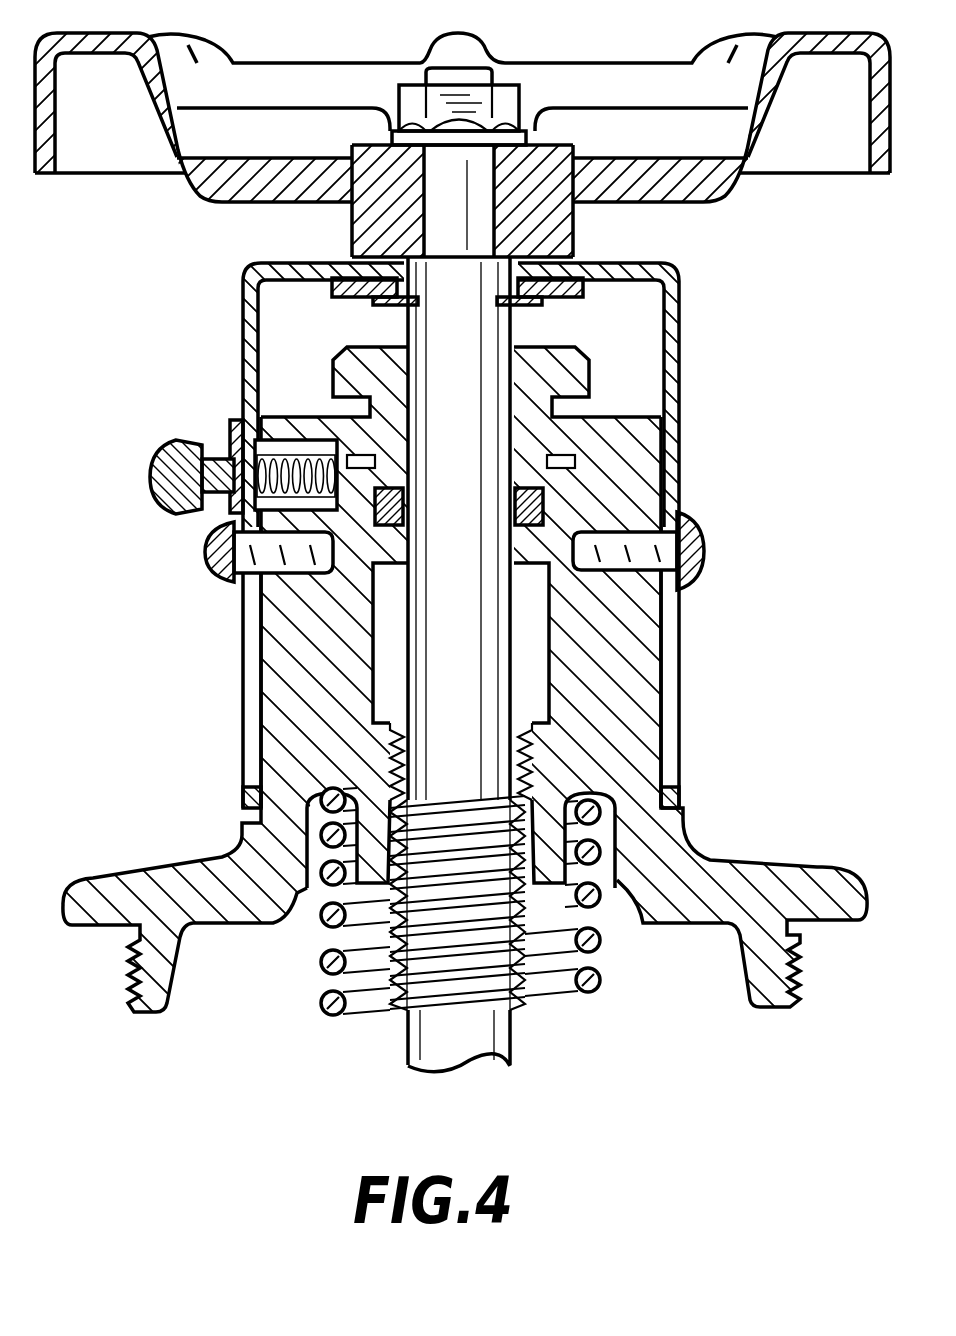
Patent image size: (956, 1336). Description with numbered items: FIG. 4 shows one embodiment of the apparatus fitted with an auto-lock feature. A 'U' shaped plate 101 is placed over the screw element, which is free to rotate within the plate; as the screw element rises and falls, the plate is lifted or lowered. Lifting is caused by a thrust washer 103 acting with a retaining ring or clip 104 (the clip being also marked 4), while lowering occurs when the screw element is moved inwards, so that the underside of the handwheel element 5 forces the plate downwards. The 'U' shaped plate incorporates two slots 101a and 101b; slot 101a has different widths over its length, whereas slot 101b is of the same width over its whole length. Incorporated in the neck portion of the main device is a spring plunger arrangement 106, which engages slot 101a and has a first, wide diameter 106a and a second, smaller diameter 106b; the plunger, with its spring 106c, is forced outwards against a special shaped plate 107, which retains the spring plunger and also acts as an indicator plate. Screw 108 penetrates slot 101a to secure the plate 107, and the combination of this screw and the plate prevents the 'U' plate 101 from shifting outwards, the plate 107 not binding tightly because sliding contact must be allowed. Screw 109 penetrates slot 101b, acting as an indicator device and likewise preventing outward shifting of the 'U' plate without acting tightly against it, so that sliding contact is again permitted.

The handwheel element 5 is at (186, 192).
The retaining ring or clip 4 is at (462, 650).
The 'U' shaped plate 101 is at (683, 418).
The slot 101a is at (243, 770).
The slot 101b is at (685, 667).
The thrust washer 103 is at (676, 318).
The retaining ring or clip 104 is at (520, 300).
The spring plunger arrangement 106 is at (217, 447).
The first, wide diameter 106a is at (223, 517).
The second, smaller diameter 106b is at (205, 512).
The indicator spring 106c is at (292, 437).
The special shaped plate 107 is at (244, 765).
The screw 108 is at (212, 585).
The screw 109 is at (665, 598).